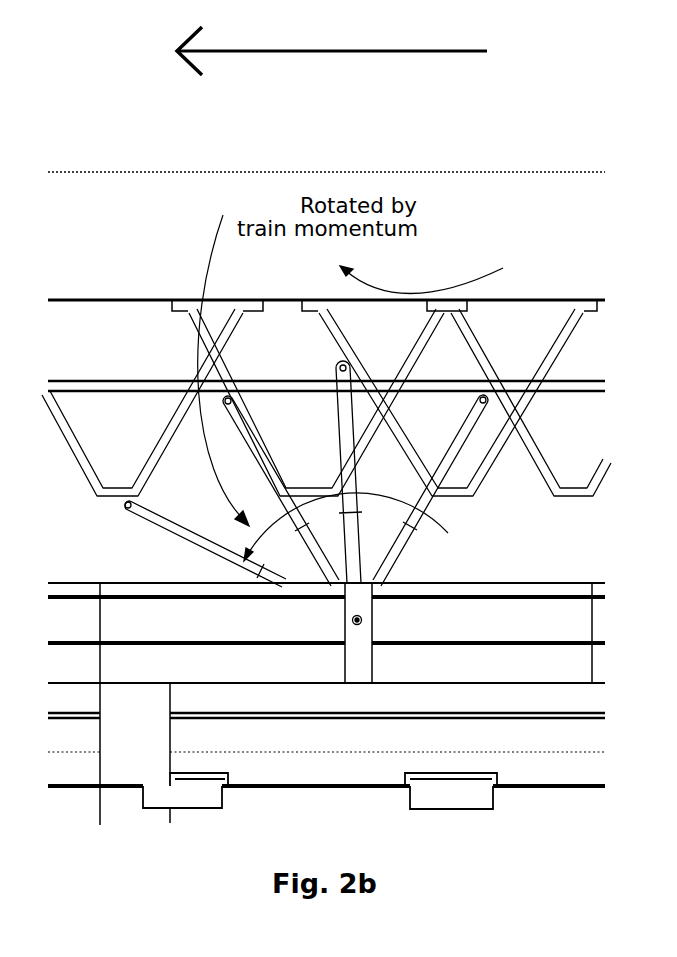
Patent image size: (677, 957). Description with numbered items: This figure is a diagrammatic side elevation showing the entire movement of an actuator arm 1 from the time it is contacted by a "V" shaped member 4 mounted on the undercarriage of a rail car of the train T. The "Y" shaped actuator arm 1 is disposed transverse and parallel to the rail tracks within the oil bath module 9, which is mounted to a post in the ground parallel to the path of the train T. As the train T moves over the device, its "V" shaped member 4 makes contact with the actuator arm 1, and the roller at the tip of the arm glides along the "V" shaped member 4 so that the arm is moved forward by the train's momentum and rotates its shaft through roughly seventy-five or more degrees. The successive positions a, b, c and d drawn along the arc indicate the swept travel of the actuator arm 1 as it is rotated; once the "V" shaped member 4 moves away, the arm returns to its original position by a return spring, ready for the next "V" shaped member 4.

The actuator arm 1 is at (451, 488).
The "V" shaped member 4 is at (326, 425).
The oil bath module 9 is at (564, 577).
The train T is at (428, 278).
The catch pocket / lever position a is at (428, 355).
The catch pocket / lever position b is at (451, 409).
The catch pocket / lever position c is at (316, 412).
The catch pocket / lever position d is at (156, 429).